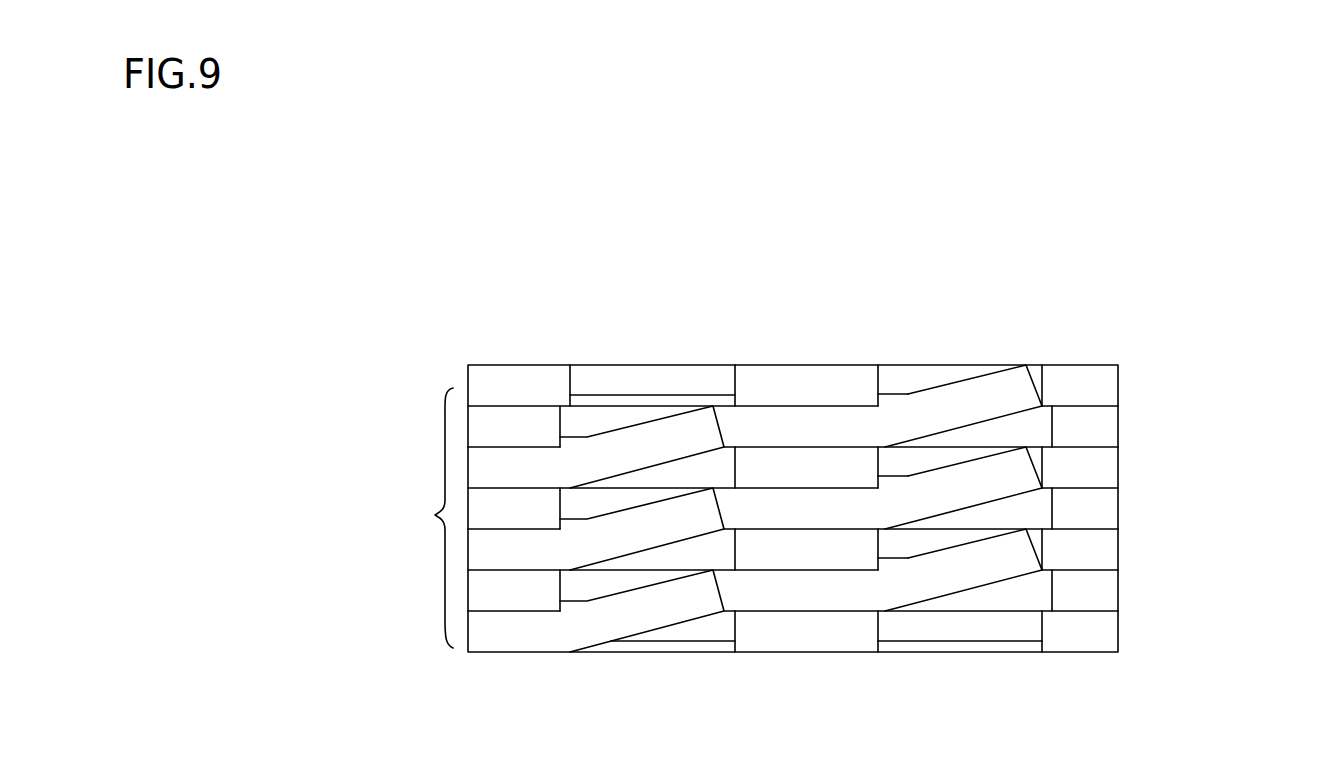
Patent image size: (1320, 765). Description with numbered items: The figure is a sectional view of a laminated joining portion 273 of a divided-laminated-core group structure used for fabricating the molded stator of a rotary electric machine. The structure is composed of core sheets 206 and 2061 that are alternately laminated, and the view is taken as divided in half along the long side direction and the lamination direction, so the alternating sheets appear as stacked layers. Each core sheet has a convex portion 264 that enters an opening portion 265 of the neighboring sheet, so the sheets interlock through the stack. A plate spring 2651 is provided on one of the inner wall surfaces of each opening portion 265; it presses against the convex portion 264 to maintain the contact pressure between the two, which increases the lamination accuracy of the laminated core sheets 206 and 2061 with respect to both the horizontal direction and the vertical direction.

The core sheet 206 is at (1103, 503).
The core sheet 2061 is at (1103, 382).
The convex portion 264 is at (1008, 388).
The opening portion 265 is at (583, 415).
The plate spring 2651 is at (878, 394).
The laminated joining portion 273 is at (396, 518).